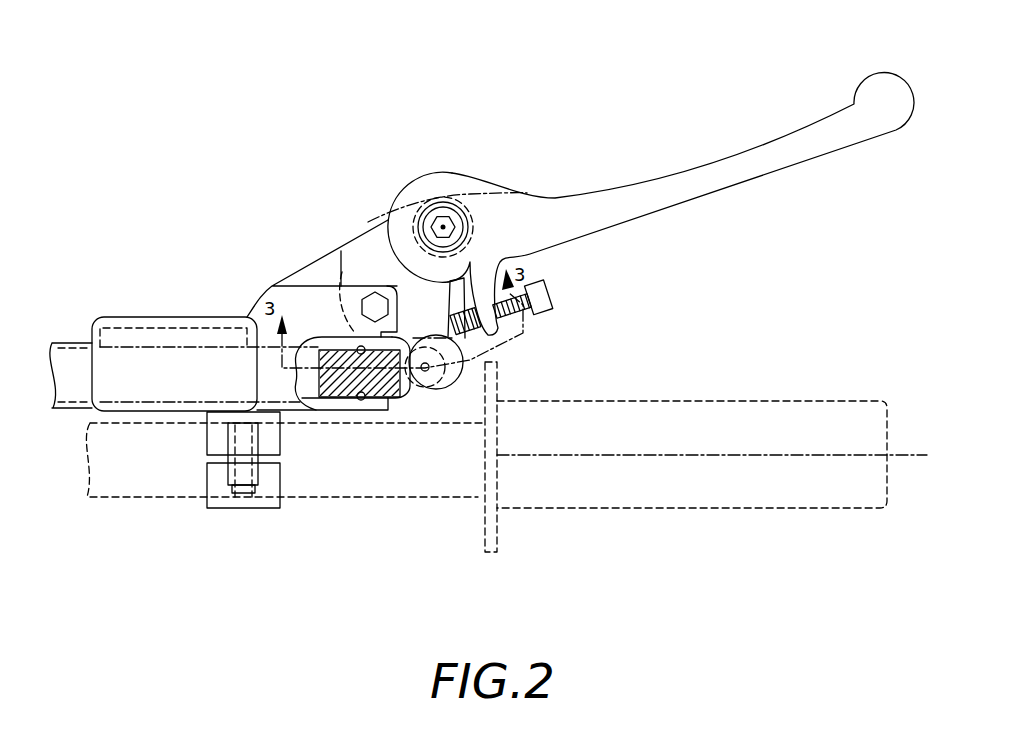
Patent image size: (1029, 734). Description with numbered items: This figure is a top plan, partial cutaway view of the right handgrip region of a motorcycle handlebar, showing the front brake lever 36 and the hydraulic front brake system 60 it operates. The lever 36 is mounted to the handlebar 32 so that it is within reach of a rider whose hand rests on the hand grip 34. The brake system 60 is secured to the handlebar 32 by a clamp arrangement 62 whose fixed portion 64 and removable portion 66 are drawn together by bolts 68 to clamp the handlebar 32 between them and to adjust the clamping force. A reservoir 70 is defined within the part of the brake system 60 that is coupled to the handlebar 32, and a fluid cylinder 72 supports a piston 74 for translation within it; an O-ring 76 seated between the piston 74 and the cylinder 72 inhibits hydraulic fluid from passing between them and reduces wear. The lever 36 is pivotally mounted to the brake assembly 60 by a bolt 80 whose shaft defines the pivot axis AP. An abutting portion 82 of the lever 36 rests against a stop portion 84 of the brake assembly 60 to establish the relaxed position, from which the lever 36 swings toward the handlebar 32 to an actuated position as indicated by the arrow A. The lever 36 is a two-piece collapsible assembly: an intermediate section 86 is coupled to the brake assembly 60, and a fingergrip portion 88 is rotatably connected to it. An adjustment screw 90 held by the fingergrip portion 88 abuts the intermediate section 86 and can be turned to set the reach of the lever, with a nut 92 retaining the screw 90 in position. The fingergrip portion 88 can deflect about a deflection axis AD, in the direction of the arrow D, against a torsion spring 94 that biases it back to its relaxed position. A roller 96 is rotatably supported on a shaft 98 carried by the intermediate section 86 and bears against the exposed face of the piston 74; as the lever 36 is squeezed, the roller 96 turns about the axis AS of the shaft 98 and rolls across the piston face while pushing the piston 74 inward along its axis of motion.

The handlebar assembly 32 is at (114, 499).
The hand grip 34 is at (708, 509).
The front brake lever 36 is at (812, 247).
The hydraulic front brake system 60 is at (247, 204).
The clamp arrangement 62 is at (186, 470).
The fixed portion 64 is at (280, 427).
The removable portion 66 is at (281, 483).
The bolt 68 is at (245, 494).
The reservoir 70 is at (131, 331).
The fluid cylinder 72 is at (266, 342).
The piston 74 is at (391, 411).
The O-ring 76 is at (361, 400).
The bolt 80 is at (302, 277).
The abutting portion 82 is at (351, 252).
The stop portion 84 is at (330, 262).
The intermediate section 86 is at (463, 362).
The fingergrip portion 88 is at (717, 152).
The adjustment screw 90 is at (552, 289).
The nut 92 is at (465, 283).
The torsion spring 94 is at (473, 192).
The roller 96 is at (407, 389).
The shaft 98 is at (420, 346).
The pivot axis AP is at (373, 300).
The deflection axis AD is at (446, 228).
The axis of the shaft AS is at (432, 394).
The arrow A is at (897, 133).
The arrow D is at (872, 70).